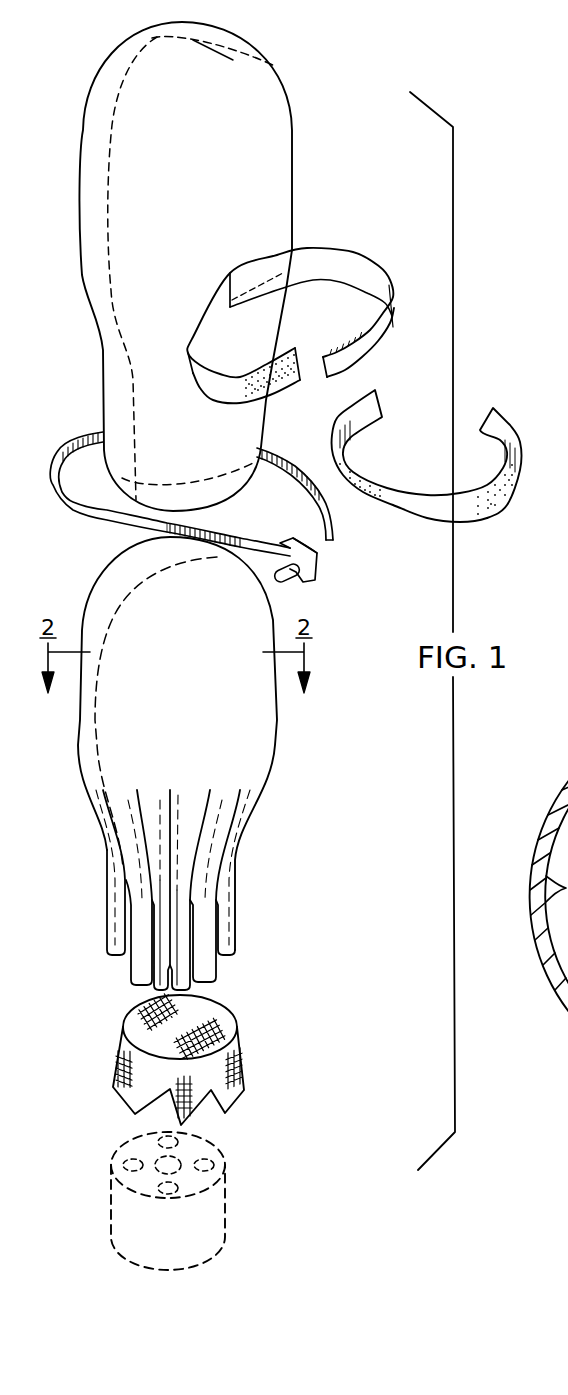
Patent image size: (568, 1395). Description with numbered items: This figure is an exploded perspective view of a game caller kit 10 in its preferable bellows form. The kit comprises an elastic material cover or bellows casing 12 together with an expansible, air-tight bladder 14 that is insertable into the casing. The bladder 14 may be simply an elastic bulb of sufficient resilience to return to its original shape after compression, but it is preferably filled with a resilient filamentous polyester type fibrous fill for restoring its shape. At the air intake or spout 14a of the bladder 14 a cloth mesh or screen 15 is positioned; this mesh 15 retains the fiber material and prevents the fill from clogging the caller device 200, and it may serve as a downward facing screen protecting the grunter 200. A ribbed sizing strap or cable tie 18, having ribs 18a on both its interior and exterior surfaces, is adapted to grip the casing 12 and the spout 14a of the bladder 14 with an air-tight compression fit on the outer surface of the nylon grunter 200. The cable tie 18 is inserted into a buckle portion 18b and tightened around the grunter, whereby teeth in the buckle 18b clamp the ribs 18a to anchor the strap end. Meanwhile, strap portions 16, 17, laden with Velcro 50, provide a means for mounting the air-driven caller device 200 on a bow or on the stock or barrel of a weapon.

The game caller kit 10 is at (476, 268).
The bellows casing 12 is at (174, 208).
The bladder 14 is at (197, 716).
The spout 14a is at (236, 920).
The cloth mesh 15 is at (238, 1037).
The strap portion 16 is at (337, 247).
The strap portion 17 is at (506, 414).
The cable tie 18 is at (73, 433).
The ribs 18a is at (167, 528).
The buckle portion 18b is at (320, 565).
The Velcro 50 is at (337, 347).
The caller device 200 is at (228, 1160).